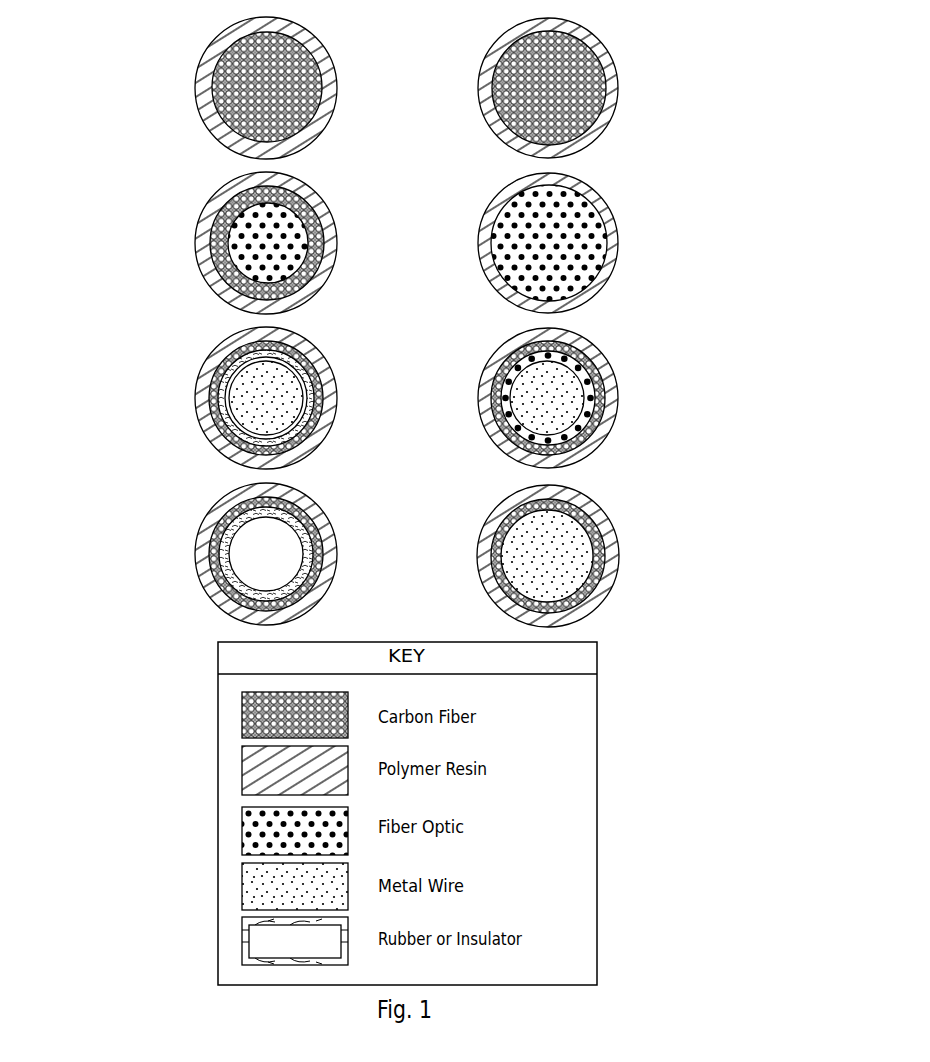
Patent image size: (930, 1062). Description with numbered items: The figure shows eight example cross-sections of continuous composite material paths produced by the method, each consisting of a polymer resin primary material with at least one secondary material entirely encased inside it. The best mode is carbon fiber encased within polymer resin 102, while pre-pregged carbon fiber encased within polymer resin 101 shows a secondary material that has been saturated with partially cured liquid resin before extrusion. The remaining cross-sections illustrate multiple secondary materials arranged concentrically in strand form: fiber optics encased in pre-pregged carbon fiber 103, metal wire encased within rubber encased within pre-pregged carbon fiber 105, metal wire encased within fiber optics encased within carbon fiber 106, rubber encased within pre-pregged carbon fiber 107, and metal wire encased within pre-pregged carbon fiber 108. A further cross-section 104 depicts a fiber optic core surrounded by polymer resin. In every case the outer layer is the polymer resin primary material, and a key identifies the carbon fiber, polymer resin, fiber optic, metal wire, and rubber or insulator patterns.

The pre-pregged carbon fiber encased within polymer resin 101 is at (183, 47).
The carbon fiber encased within polymer resin 102 is at (632, 46).
The fiber optics encased in pre-pregged carbon fiber 103 is at (183, 203).
The cable cross-section with fiber optic core 104 is at (632, 202).
The metal wire encased within rubber encased within pre-pregged carbon fiber 105 is at (183, 357).
The metal wire encased within fiber optics encased within carbon fiber 106 is at (632, 357).
The rubber encased within pre-pregged carbon fiber 107 is at (183, 512).
The metal wire encased within pre-pregged carbon fiber 108 is at (632, 511).